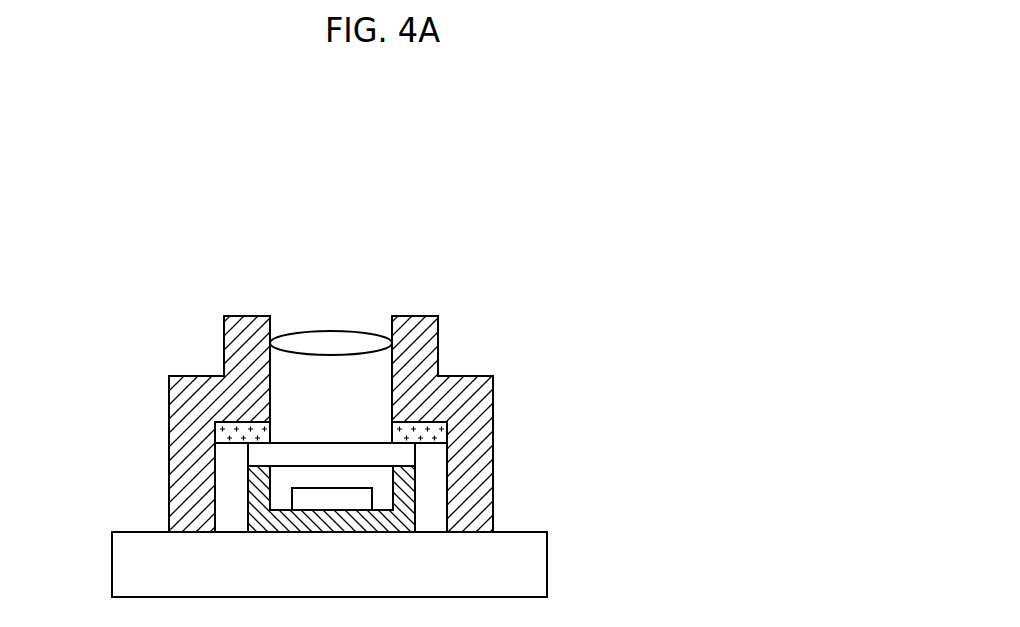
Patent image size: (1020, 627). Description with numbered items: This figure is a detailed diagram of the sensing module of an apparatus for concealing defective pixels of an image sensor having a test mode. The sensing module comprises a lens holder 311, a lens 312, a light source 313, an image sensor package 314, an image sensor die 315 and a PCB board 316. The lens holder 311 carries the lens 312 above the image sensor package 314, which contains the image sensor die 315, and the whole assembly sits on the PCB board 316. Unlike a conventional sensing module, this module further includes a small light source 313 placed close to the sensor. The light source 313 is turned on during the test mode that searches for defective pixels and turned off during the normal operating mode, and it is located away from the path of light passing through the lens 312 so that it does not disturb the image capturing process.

The lens holder 311 is at (440, 337).
The lens 312 is at (357, 331).
The light source 313 is at (437, 436).
The image sensor package 314 is at (415, 465).
The image sensor die 315 is at (372, 498).
The PCB board 316 is at (547, 565).